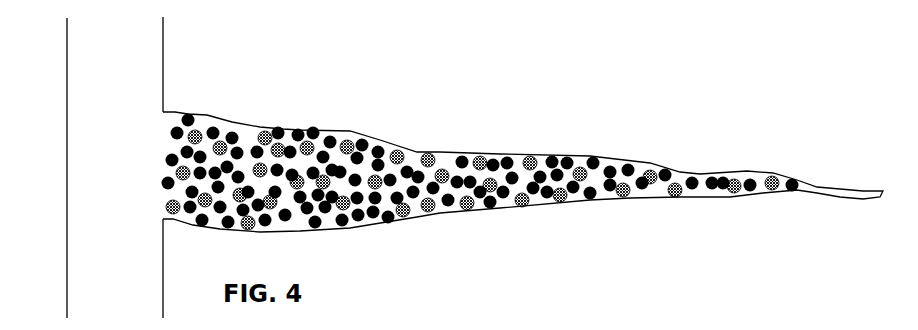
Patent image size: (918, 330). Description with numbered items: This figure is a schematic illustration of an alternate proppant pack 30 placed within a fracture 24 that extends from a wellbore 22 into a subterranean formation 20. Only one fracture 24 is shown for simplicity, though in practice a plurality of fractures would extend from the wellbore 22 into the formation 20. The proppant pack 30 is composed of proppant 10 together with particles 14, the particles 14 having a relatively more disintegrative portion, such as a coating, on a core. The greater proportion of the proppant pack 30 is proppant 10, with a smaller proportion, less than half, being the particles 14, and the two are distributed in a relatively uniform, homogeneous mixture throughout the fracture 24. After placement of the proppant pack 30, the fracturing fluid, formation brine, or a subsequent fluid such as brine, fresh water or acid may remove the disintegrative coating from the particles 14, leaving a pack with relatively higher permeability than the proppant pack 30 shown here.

The proppant 10 is at (210, 117).
The particles 14 is at (418, 152).
The subterranean formation 20 is at (393, 94).
The wellbore 22 is at (123, 94).
The fracture 24 is at (680, 172).
The proppant pack 30 is at (140, 184).